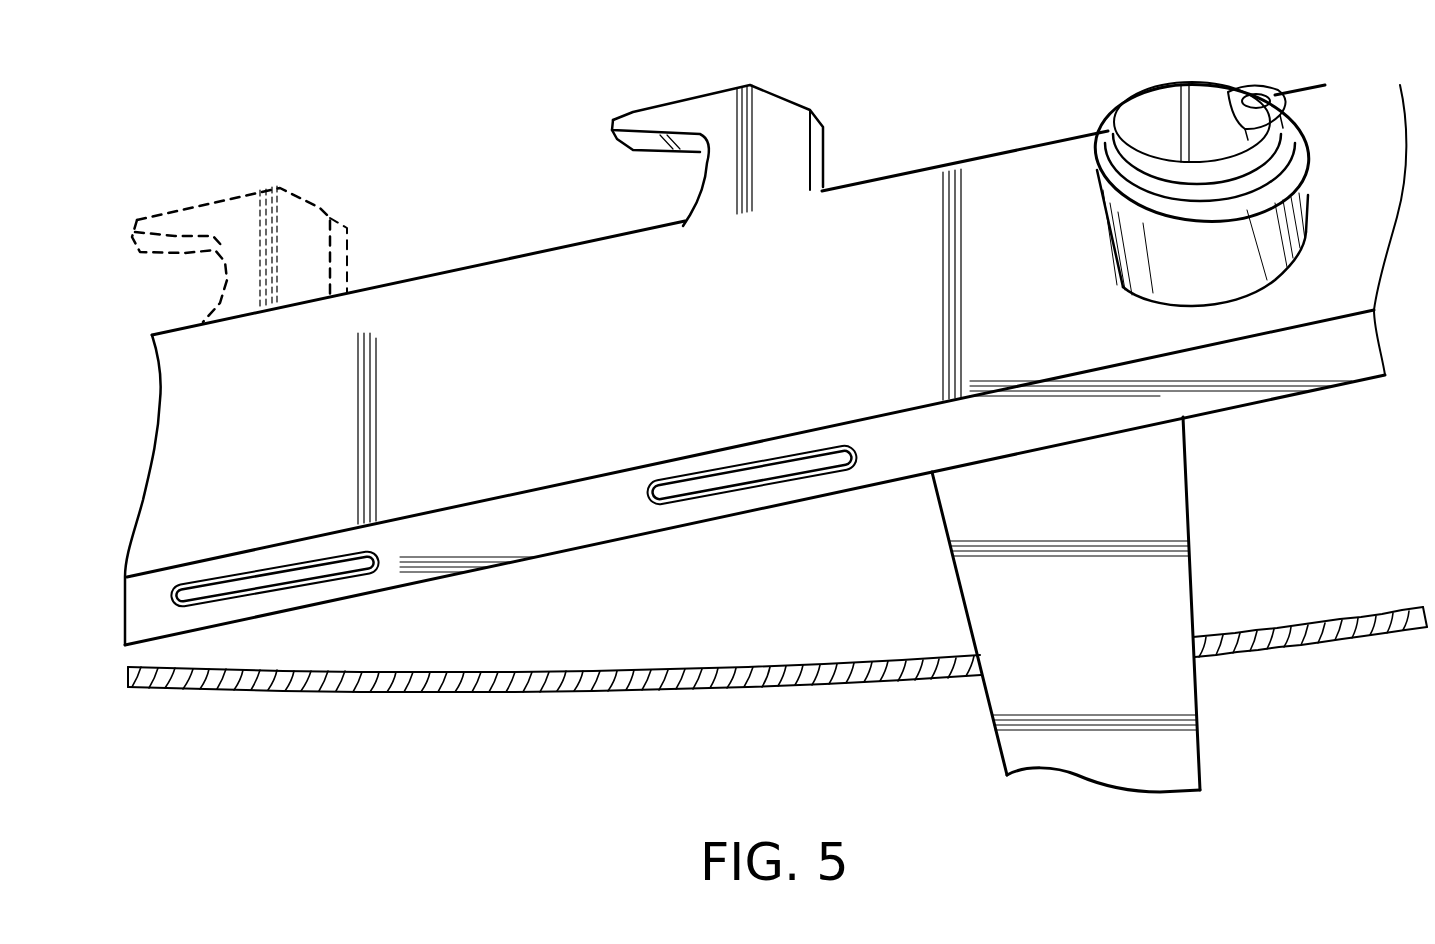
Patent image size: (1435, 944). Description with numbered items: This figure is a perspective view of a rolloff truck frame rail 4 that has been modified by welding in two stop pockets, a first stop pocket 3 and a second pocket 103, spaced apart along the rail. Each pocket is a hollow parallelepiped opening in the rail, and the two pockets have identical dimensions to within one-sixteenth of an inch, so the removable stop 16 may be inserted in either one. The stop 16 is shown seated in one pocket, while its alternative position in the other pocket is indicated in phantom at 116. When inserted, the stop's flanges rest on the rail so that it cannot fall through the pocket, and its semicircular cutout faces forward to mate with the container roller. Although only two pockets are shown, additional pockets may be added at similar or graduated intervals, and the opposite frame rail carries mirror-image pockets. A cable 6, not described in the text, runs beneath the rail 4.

The frame rail 4 is at (573, 392).
The removable stop 16 is at (777, 117).
The clip (alternative position, phantom) 116 is at (300, 200).
The stop pocket 3 is at (803, 463).
The slot 103 is at (327, 568).
The cable / rope 6 is at (443, 703).